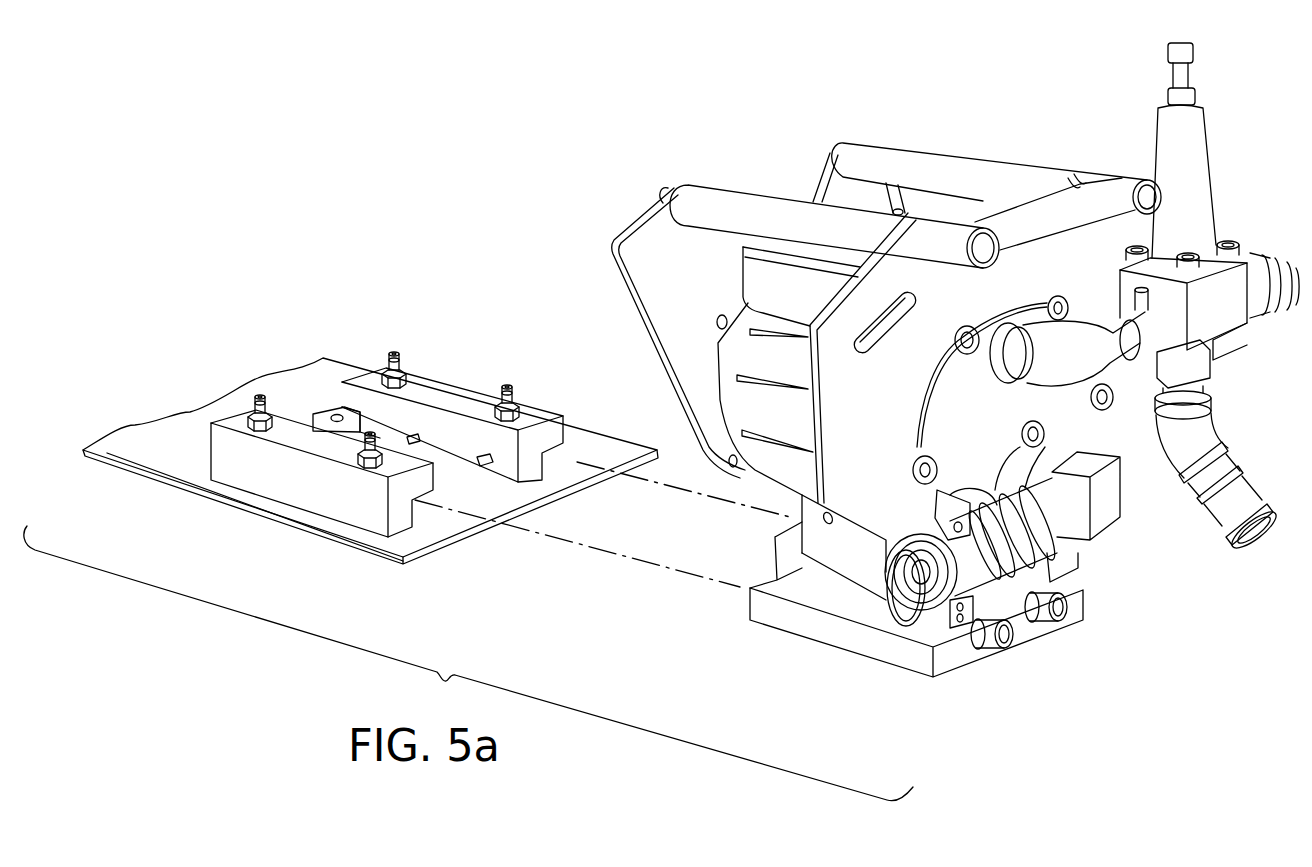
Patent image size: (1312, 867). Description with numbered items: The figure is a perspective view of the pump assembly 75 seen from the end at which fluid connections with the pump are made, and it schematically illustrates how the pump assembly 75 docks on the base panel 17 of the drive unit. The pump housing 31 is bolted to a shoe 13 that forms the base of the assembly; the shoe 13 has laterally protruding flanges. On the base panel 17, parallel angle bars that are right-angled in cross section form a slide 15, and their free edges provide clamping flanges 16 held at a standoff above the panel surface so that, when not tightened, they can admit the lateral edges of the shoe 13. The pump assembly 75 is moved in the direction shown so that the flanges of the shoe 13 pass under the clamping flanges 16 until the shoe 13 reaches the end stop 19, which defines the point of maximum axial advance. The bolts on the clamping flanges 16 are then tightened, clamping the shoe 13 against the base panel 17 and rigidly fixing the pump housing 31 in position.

The shoe 13 is at (960, 648).
The slide 15 is at (477, 493).
The clamping flanges 16 is at (432, 387).
The base panel 17 is at (176, 447).
The end stop 19 is at (318, 417).
The pump housing 31 is at (773, 458).
The pump assembly 75 is at (955, 382).